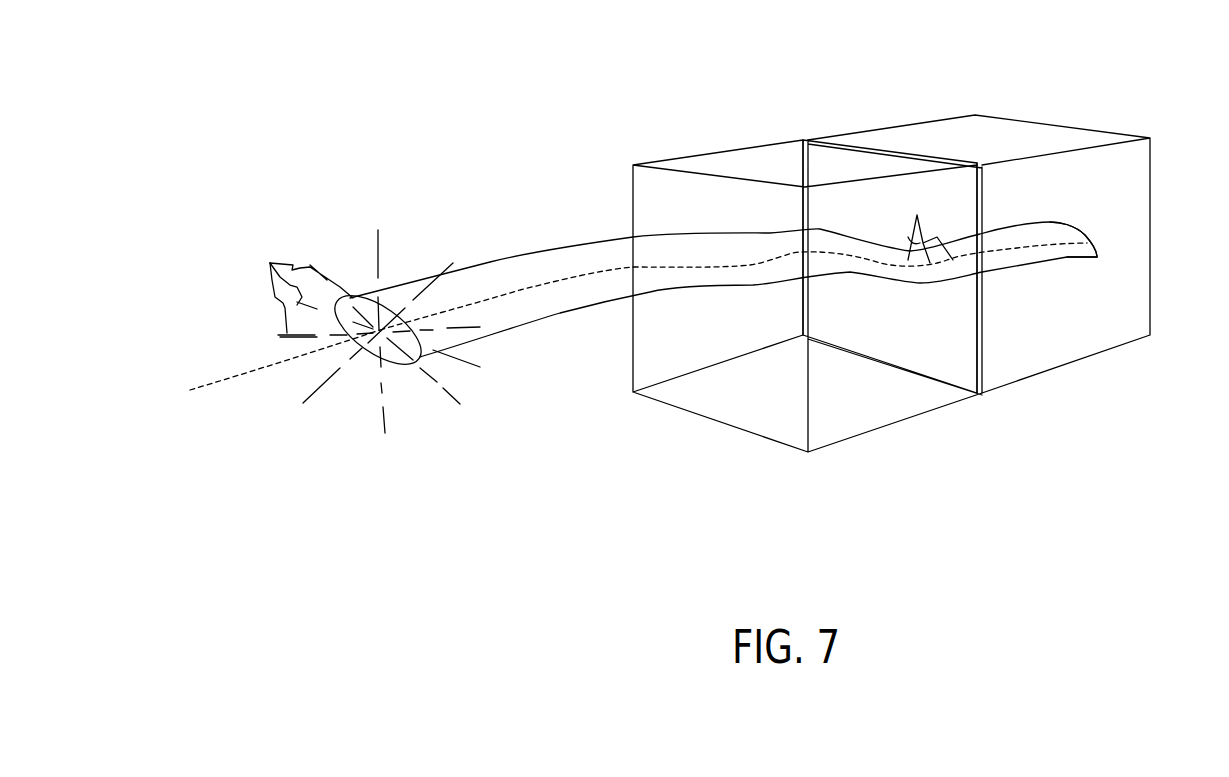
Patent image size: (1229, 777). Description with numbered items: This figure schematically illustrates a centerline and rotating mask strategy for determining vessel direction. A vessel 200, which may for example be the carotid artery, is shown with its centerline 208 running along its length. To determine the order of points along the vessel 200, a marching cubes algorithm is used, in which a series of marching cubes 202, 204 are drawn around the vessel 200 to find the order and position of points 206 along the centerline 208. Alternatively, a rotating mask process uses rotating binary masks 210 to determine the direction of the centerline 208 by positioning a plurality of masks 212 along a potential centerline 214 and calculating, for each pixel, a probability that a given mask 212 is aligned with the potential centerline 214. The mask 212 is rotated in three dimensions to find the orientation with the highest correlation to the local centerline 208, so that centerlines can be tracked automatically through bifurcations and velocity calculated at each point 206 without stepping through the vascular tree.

The vessel 200 is at (1063, 265).
The marching cube 202 is at (1095, 138).
The marching cube 204 is at (753, 160).
The points 206 is at (917, 215).
The centerline 208 is at (1098, 238).
The rotating binary masks 210 is at (397, 383).
The mask 212 is at (270, 263).
The potential centerline 214 is at (238, 373).